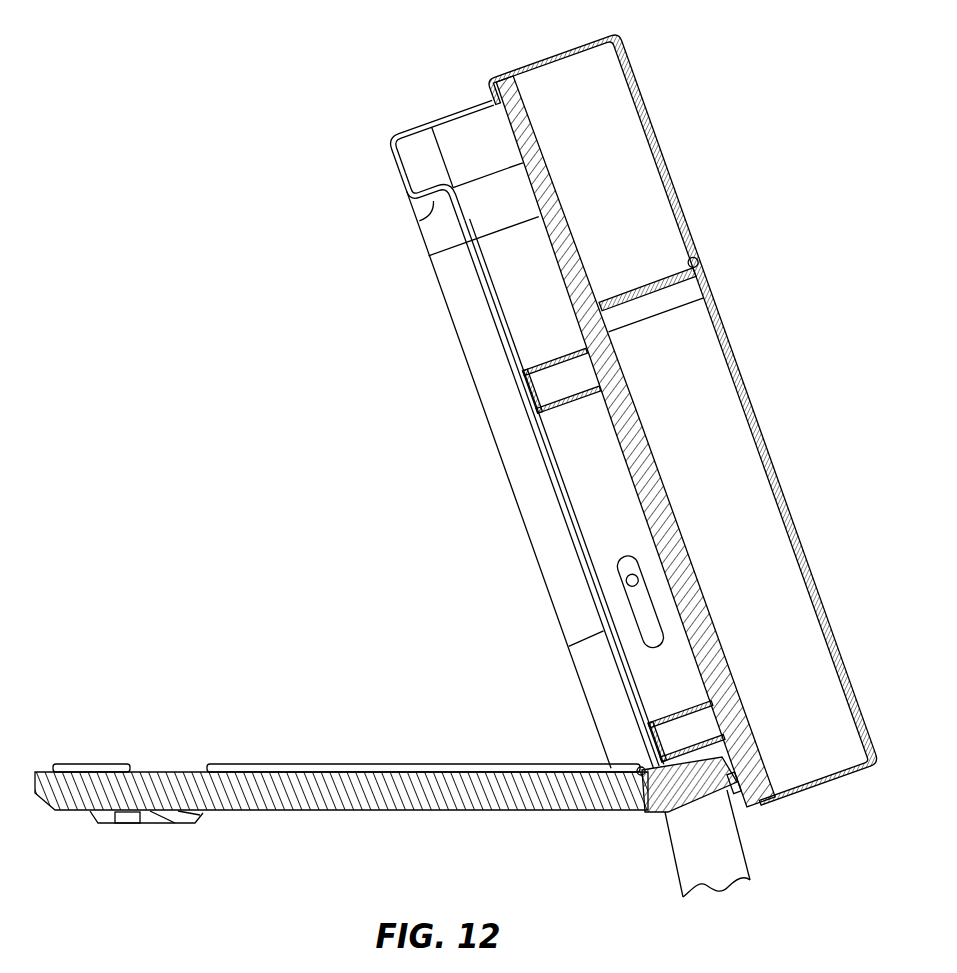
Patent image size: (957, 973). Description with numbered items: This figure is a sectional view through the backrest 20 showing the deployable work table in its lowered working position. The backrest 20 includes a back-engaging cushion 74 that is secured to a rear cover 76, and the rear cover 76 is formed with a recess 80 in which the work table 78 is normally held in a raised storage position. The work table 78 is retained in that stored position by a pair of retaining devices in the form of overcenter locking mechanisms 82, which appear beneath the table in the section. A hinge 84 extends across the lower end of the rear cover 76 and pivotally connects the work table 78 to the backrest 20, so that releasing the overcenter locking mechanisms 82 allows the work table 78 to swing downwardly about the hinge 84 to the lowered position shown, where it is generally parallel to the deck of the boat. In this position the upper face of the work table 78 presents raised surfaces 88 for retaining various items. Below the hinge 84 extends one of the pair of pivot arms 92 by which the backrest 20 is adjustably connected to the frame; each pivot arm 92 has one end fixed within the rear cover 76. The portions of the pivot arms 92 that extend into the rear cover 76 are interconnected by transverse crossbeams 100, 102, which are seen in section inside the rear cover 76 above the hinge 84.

The backrest 20 is at (708, 263).
The back-engaging cushion 74 is at (620, 167).
The rear cover 76 is at (447, 122).
The deployable work table 78 is at (313, 790).
The recess 80 is at (418, 220).
The overcenter locking mechanism 82 is at (127, 824).
The hinge 84 is at (637, 763).
The raised surface 88 is at (97, 763).
The pivot arm 92 is at (727, 843).
The transverse crossbeam 100 is at (545, 362).
The transverse crossbeam 102 is at (670, 705).